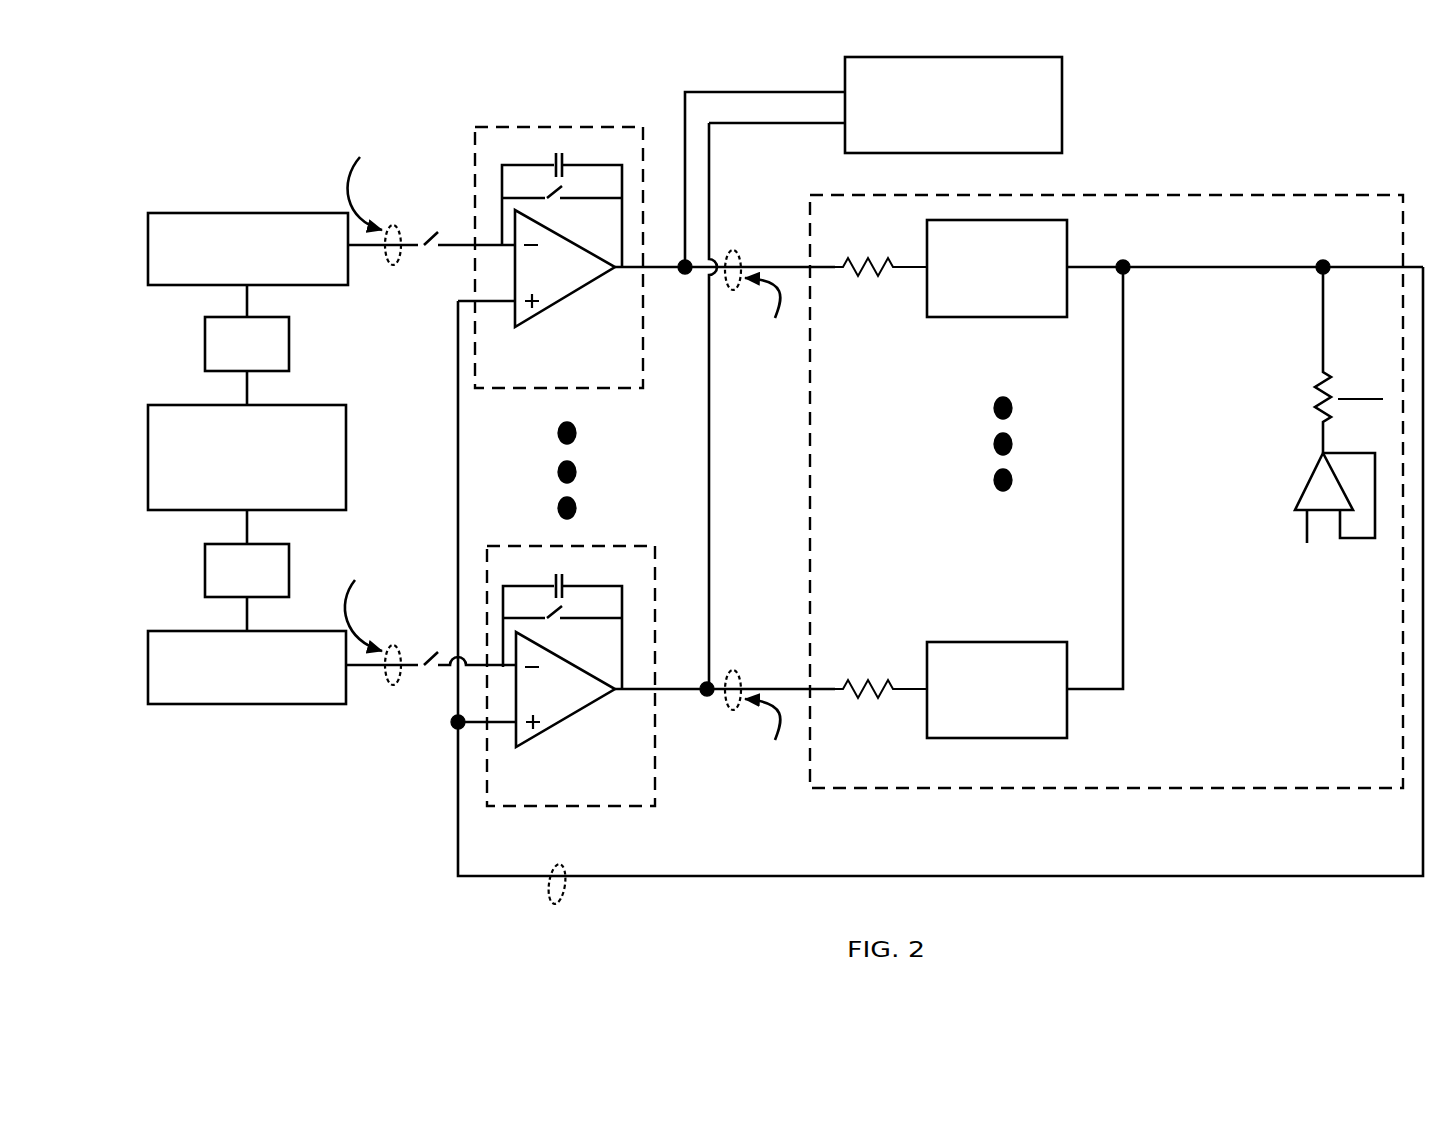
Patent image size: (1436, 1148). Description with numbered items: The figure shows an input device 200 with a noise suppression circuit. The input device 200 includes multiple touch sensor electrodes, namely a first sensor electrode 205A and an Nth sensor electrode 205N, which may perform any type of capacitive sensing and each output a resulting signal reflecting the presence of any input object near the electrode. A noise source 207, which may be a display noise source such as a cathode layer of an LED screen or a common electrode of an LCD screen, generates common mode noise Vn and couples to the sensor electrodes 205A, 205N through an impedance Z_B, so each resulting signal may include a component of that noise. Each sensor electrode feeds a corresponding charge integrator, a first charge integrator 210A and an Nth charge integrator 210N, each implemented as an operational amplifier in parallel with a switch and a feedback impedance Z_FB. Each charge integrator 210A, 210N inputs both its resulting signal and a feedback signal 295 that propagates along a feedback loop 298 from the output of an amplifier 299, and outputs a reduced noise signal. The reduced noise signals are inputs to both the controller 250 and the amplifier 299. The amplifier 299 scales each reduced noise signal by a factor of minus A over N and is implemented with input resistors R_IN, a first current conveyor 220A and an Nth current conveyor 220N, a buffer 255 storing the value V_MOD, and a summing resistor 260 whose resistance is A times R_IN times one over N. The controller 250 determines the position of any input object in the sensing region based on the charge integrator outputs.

The input device 200 is at (266, 137).
The sensor electrode 1 205A is at (270, 275).
The sensor electrode N 205N is at (270, 696).
The noise source 207 is at (263, 497).
The charge integrator 1 210A is at (608, 382).
The charge integrator N 210N is at (613, 802).
The current conveyor 1 220A is at (1018, 308).
The current conveyor N 220N is at (1020, 729).
The controller 250 is at (968, 131).
The buffer 255 is at (1306, 474).
The summing resistor 260 is at (1316, 378).
The feedback signal 295 is at (575, 926).
The feedback loop 298 is at (453, 863).
The amplifier 299 is at (1302, 744).